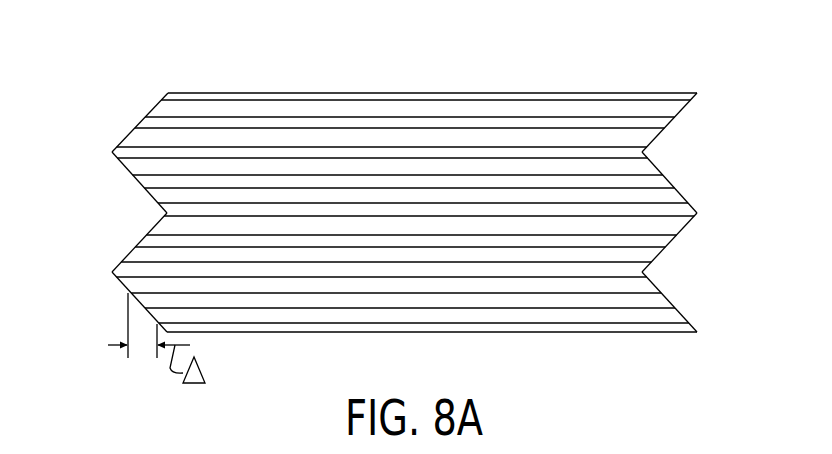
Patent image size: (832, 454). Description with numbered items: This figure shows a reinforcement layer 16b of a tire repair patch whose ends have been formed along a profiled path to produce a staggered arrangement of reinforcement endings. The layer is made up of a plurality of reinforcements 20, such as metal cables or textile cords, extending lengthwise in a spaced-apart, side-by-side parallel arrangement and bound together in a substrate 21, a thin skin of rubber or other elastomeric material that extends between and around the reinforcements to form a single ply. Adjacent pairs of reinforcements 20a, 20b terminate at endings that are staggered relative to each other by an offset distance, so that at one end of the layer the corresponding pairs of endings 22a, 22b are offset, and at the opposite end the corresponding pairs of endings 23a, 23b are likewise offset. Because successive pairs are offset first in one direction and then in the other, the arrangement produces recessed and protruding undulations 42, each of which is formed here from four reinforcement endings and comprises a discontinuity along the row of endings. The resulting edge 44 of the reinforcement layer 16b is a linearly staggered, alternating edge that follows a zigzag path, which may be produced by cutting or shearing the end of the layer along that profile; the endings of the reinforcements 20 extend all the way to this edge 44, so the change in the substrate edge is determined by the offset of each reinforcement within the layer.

The reinforcement layer 16b is at (651, 81).
The reinforcements 20 is at (535, 137).
The first reinforcement of adjacent pair 20a is at (243, 137).
The second reinforcement of adjacent pair 20b is at (180, 108).
The substrate 21 is at (433, 122).
The first reinforcement ending 22a is at (118, 140).
The second reinforcement ending 22b is at (150, 110).
The first reinforcement ending at opposite end 23a is at (655, 142).
The second reinforcement ending at opposite end 23b is at (683, 109).
The undulation 42 is at (96, 142).
The staggered edge 44 is at (158, 101).